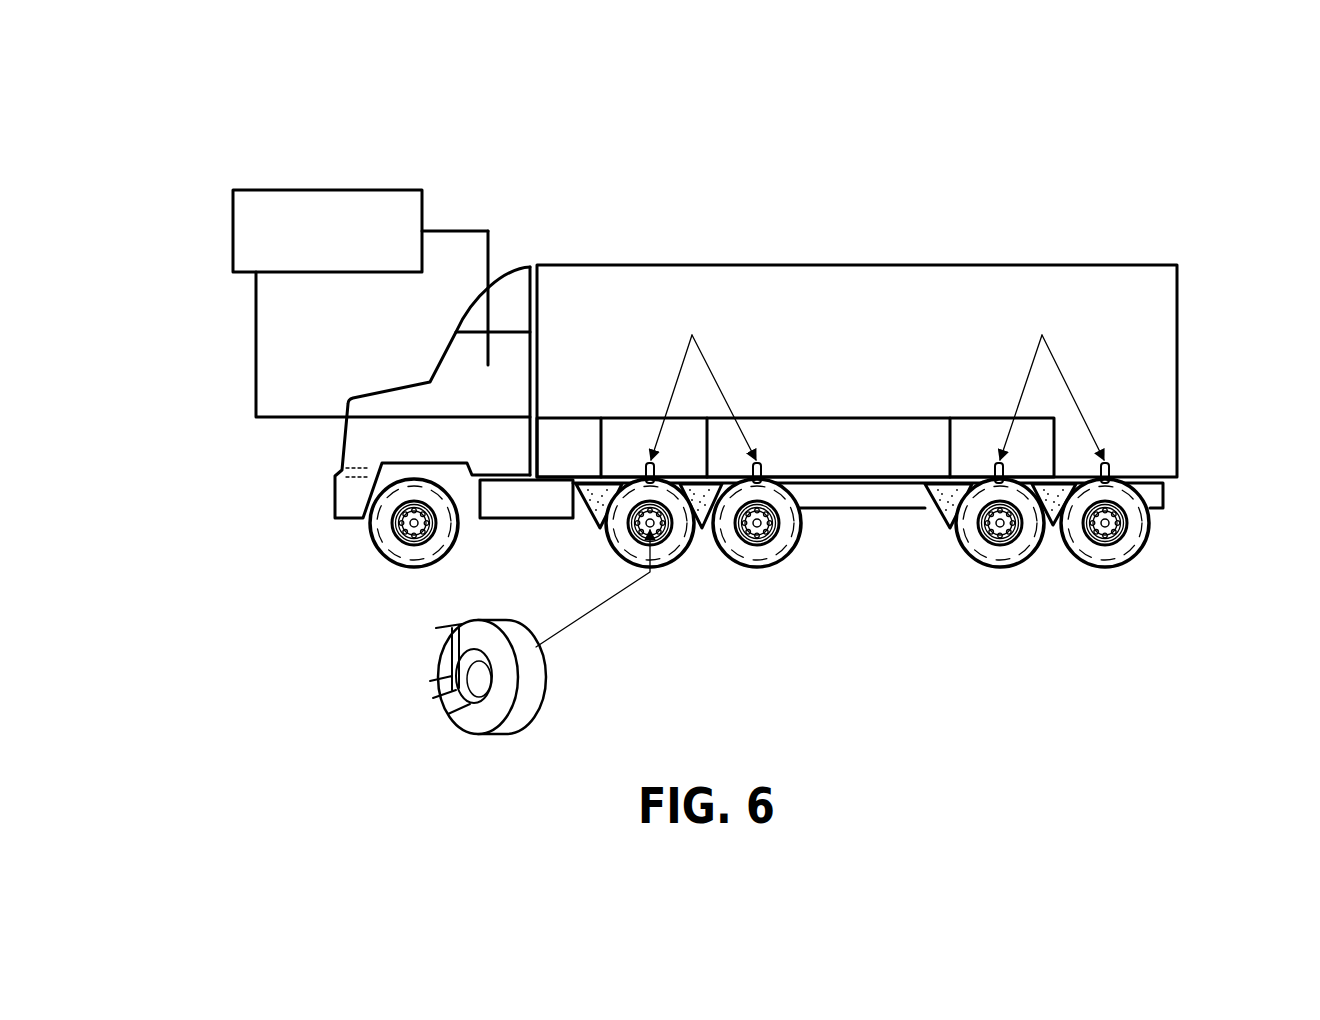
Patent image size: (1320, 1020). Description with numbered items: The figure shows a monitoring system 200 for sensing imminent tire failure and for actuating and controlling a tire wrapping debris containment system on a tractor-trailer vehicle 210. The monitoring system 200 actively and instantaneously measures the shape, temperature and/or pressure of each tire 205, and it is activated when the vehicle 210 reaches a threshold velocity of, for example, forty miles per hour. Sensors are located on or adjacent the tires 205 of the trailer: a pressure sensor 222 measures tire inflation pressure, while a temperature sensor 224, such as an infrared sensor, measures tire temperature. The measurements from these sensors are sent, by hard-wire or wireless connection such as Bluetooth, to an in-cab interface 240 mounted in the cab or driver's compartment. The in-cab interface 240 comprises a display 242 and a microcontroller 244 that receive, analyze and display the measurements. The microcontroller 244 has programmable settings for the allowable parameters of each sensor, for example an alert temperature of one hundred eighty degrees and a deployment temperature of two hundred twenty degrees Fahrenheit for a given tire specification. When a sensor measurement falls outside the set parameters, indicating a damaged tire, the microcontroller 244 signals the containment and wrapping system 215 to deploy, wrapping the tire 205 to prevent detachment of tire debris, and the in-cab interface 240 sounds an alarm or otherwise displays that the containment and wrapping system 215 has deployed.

The monitoring system 200 is at (188, 162).
The tire 205 is at (1112, 553).
The vehicle 210 is at (872, 298).
The containment and wrapping system 215 is at (927, 493).
The pressure sensor 222 is at (1118, 464).
The temperature sensor 224 is at (396, 656).
The in-cab interface 240 is at (308, 180).
The display 242 is at (260, 212).
The microcontroller 244 is at (256, 244).